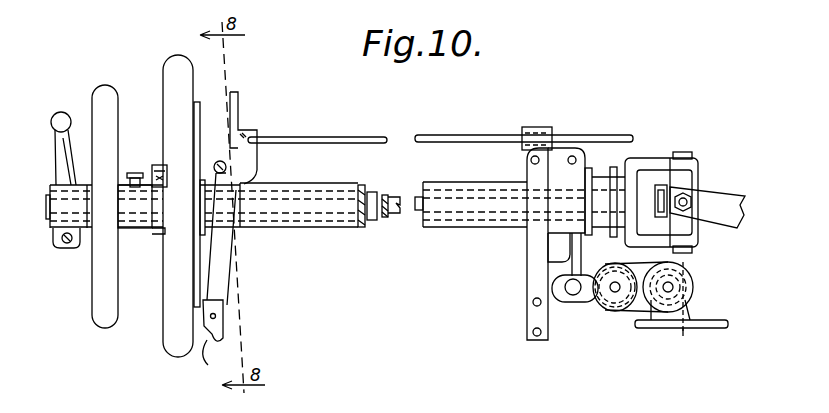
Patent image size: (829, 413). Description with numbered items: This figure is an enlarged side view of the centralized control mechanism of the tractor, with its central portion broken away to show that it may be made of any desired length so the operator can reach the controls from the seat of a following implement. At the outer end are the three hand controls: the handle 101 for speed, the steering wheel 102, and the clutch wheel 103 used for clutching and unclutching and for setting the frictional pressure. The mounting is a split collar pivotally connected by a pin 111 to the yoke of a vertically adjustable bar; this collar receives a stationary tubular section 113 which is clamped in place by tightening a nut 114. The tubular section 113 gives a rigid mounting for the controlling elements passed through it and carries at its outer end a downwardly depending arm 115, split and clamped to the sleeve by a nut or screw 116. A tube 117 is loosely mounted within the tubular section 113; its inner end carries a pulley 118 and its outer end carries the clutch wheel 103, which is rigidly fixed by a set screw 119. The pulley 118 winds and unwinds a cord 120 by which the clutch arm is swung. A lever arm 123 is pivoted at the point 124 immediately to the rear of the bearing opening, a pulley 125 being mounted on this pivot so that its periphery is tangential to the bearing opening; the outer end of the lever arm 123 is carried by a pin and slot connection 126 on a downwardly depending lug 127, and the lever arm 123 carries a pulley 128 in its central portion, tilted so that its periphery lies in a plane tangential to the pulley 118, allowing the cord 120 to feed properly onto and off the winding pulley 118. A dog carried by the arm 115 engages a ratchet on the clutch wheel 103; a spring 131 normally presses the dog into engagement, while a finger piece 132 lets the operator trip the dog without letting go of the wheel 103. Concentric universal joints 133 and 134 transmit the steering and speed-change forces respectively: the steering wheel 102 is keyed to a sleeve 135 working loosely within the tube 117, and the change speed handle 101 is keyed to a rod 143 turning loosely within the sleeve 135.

The handle 101 is at (62, 150).
The steering wheel 102 is at (105, 320).
The clutch wheel 103 is at (180, 350).
The pin 111 is at (531, 160).
The tubular section 113 is at (357, 230).
The nut 114 is at (573, 157).
The downwardly depending arm 115 is at (217, 268).
The nut or screw 116 is at (243, 177).
The tube 117 is at (377, 223).
The pulley 118 is at (603, 170).
The set screw 119 is at (155, 163).
The cord 120 is at (686, 332).
The lever arm 123 is at (591, 302).
The pivot point 124 is at (672, 287).
The pulley 125 is at (687, 267).
The pin and slot connection 126 is at (572, 294).
The downwardly depending lug 127 is at (570, 263).
The pulley 128 is at (616, 311).
The spring 131 is at (213, 363).
The finger piece 132 is at (216, 329).
The universal joint 133 is at (671, 160).
The universal joint 134 is at (674, 186).
The sleeve 135 is at (382, 193).
The rod 143 is at (397, 202).